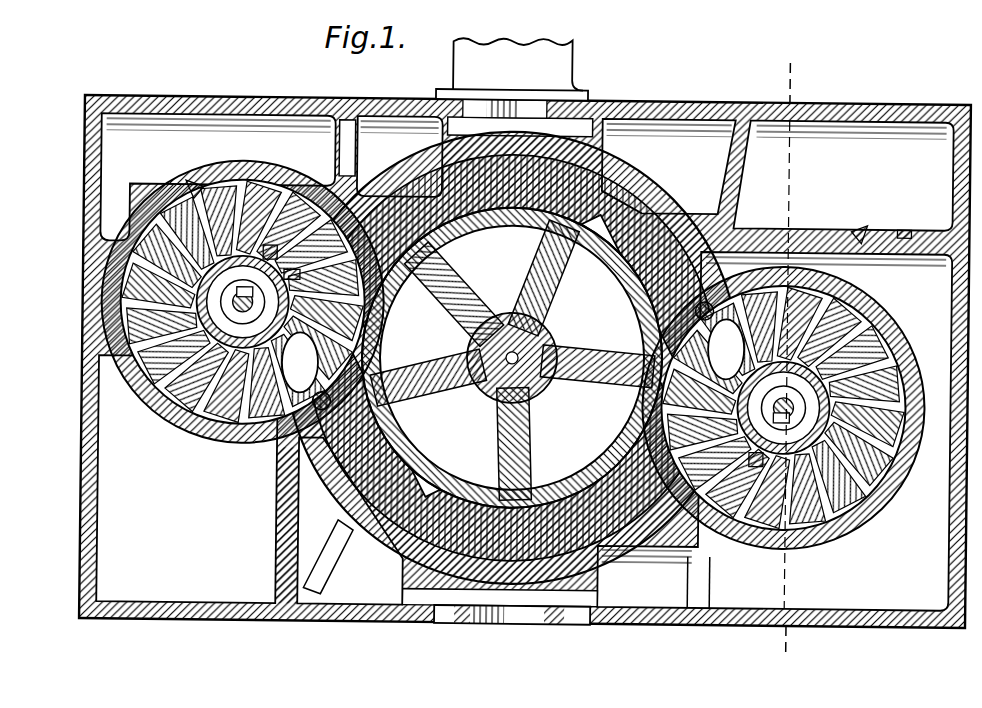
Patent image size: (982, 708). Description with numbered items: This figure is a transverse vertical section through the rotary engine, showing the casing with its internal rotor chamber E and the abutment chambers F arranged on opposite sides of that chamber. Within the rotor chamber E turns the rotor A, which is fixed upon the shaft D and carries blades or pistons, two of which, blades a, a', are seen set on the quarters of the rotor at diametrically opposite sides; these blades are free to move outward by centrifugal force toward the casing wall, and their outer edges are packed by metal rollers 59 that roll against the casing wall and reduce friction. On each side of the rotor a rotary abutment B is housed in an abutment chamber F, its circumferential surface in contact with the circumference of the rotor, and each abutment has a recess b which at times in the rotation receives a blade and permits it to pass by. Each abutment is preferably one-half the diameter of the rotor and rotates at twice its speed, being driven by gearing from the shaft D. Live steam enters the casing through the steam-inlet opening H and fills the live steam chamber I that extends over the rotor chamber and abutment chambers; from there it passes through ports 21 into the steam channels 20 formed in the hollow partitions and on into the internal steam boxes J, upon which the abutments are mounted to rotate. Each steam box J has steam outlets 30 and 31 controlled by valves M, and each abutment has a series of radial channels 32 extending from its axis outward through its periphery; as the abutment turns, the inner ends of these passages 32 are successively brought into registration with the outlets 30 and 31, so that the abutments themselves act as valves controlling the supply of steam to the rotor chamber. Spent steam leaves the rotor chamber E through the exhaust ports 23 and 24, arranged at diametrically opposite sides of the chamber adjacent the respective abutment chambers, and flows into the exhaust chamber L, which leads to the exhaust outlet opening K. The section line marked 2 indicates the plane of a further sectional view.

The rotor A is at (600, 242).
The rotary abutment B is at (118, 280).
The shaft D is at (528, 342).
The rotor chamber E is at (669, 167).
The abutment chamber F is at (136, 212).
The steam-inlet opening H is at (570, 40).
The live steam chamber I is at (526, 181).
The internal steam box J is at (513, 354).
The exhaust outlet opening K is at (512, 630).
The exhaust chamber L is at (350, 520).
The valve M is at (270, 250).
The blade a is at (393, 410).
The blade a' is at (632, 302).
The recess b is at (513, 355).
The section line 2 is at (778, 678).
The steam channel 20 is at (184, 188).
The port 21 is at (906, 226).
The exhaust port 23 is at (705, 292).
The exhaust port 24 is at (276, 478).
The steam outlet 30 is at (292, 274).
The steam outlet 31 is at (756, 452).
The radial channel 32 is at (124, 322).
The metal roller 59 is at (313, 404).